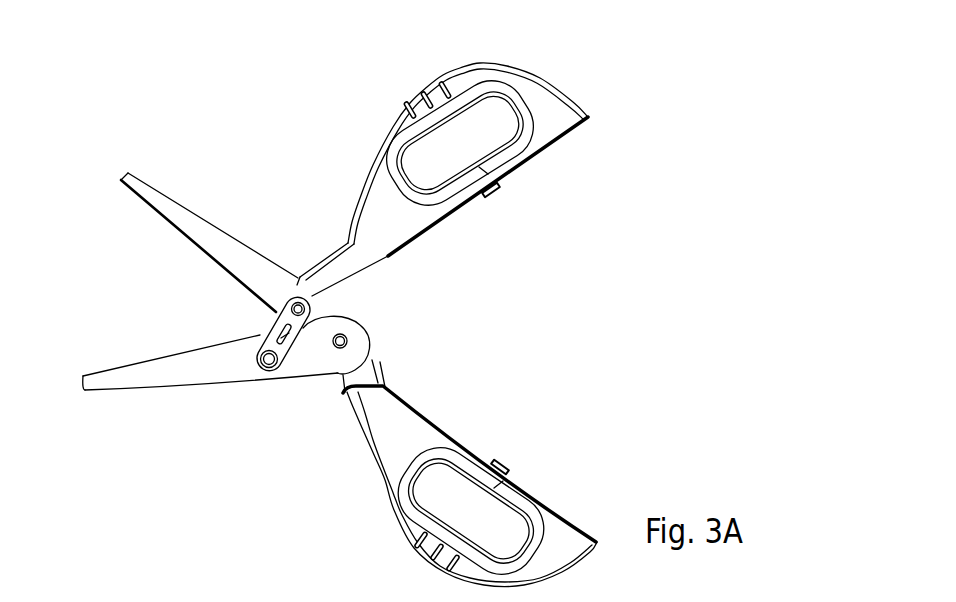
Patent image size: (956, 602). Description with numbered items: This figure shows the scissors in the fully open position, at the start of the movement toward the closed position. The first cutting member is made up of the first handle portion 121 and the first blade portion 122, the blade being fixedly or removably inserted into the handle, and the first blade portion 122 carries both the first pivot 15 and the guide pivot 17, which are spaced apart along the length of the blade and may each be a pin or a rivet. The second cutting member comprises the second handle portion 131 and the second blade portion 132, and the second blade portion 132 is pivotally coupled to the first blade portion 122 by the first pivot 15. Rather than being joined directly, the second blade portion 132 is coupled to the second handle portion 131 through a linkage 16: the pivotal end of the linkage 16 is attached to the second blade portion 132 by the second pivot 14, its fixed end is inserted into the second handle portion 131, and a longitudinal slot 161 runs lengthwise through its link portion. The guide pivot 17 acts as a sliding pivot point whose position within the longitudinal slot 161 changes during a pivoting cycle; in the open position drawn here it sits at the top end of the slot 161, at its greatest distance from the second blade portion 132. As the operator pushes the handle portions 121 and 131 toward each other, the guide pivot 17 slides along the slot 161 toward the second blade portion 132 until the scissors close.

The second handle portion 131 is at (548, 110).
The first handle portion 121 is at (548, 535).
The first blade portion 122 is at (216, 243).
The second blade portion 132 is at (168, 385).
The first pivot 15 is at (347, 339).
The linkage 16 is at (262, 316).
The longitudinal slot 161 is at (297, 341).
The second pivot 14 is at (270, 368).
The guide pivot 17 is at (299, 297).